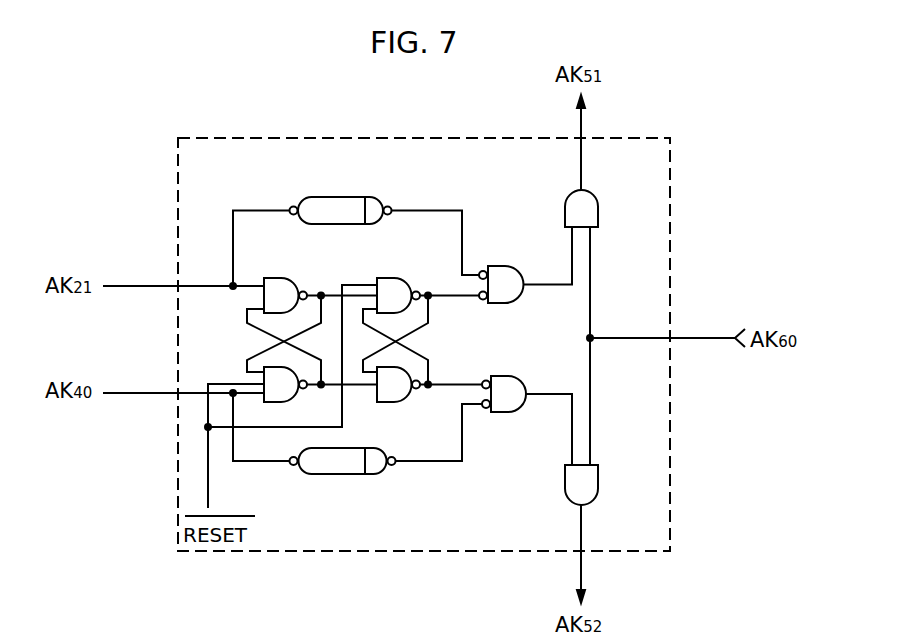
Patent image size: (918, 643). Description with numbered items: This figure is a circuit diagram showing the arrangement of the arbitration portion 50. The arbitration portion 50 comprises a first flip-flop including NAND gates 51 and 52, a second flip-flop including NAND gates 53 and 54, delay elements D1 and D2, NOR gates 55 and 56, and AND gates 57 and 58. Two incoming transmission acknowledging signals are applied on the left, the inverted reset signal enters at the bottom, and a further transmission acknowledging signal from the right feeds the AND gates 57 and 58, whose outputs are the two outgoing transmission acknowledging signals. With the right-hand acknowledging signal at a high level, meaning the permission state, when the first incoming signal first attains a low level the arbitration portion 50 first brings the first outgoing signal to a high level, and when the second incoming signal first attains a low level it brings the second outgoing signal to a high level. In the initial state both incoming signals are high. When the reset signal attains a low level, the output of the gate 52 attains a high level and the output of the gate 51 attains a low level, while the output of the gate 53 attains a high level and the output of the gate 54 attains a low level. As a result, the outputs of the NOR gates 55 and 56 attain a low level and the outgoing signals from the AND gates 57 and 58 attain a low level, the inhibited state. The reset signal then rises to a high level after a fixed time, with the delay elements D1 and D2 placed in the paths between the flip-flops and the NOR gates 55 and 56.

The arbitration portion 50 is at (245, 135).
The NAND gate 51 is at (288, 281).
The NAND gate 52 is at (288, 393).
The NAND gate 53 is at (397, 290).
The NAND gate 54 is at (400, 396).
The NOR gate 55 is at (508, 266).
The NOR gate 56 is at (519, 403).
The AND gate 57 is at (598, 203).
The AND gate 58 is at (594, 487).
The delay element D1 is at (350, 205).
The delay element D2 is at (352, 471).